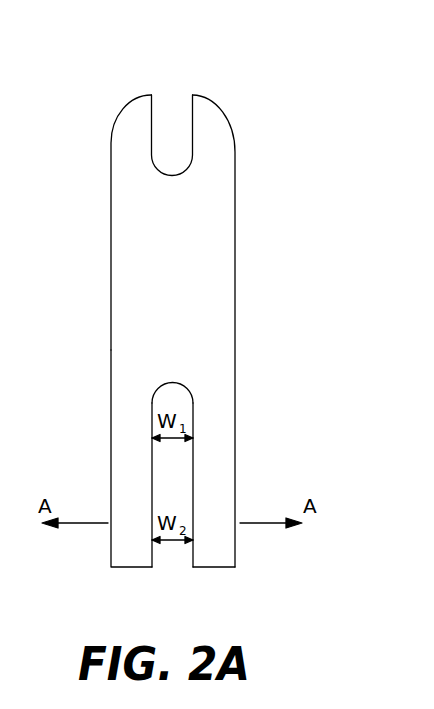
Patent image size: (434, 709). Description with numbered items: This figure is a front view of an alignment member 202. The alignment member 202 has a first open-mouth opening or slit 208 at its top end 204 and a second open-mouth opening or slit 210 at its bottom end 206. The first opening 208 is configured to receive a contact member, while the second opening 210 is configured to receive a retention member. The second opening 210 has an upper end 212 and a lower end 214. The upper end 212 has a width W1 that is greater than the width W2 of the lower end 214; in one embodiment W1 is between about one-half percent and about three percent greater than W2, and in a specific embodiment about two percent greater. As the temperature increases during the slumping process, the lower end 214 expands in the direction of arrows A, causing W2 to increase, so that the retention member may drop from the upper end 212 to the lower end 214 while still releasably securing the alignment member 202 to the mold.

The alignment member 202 is at (270, 160).
The top end 204 is at (132, 143).
The bottom end 206 is at (113, 417).
The first open-mouth opening or slit 208 is at (181, 117).
The second open-mouth opening or slit 210 is at (177, 480).
The upper end 212 is at (177, 405).
The lower end 214 is at (178, 552).